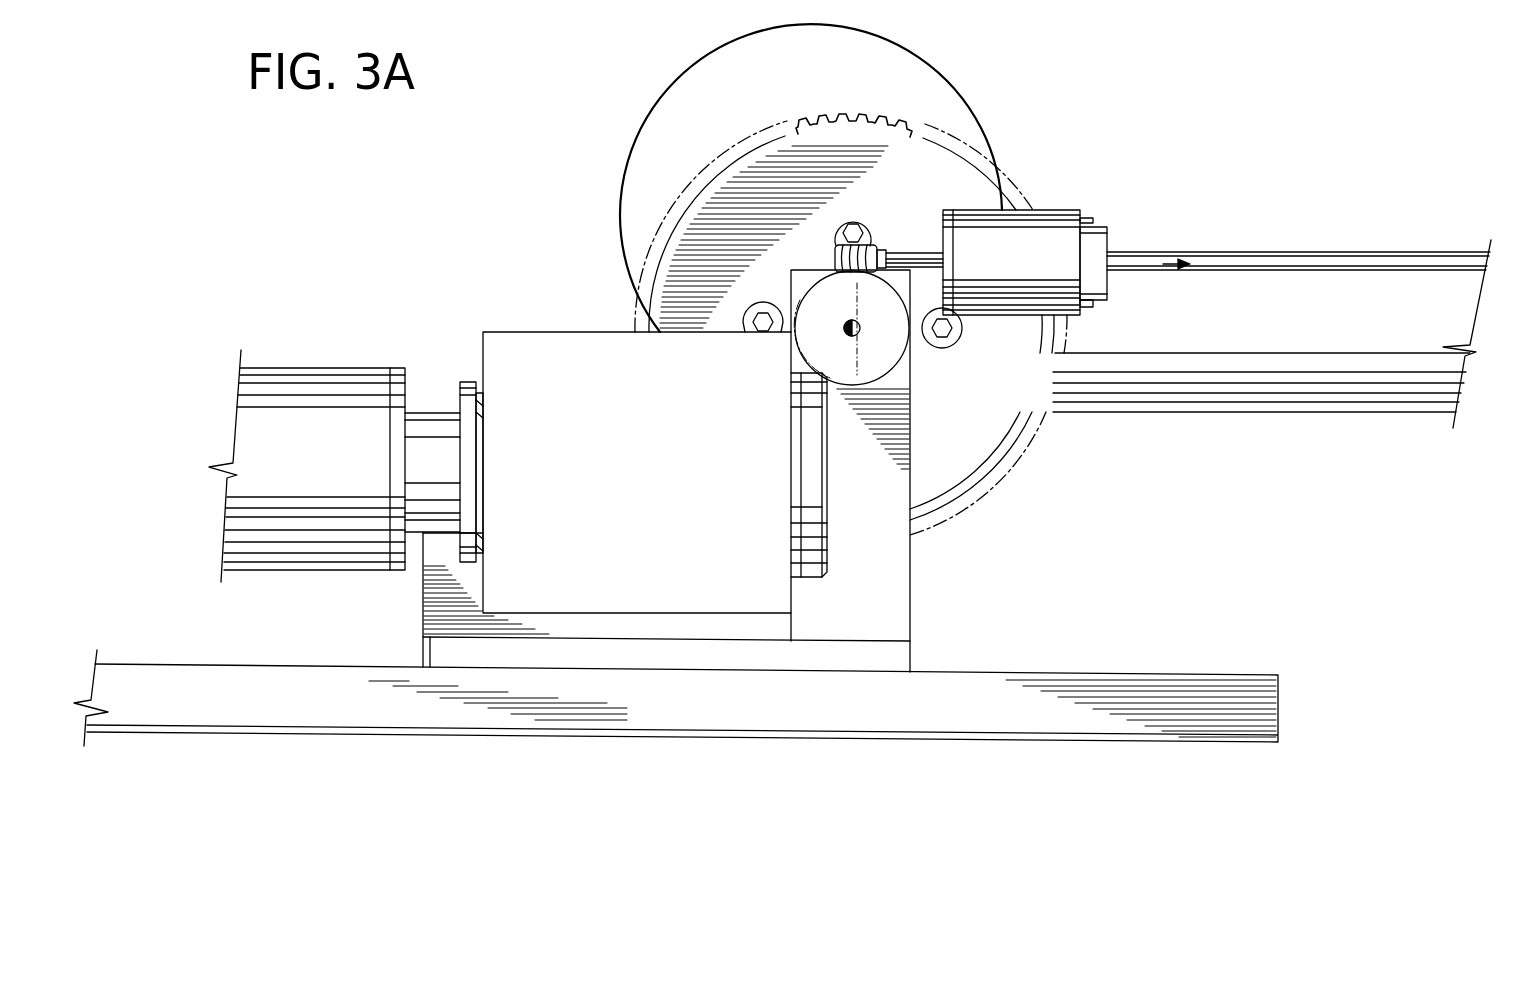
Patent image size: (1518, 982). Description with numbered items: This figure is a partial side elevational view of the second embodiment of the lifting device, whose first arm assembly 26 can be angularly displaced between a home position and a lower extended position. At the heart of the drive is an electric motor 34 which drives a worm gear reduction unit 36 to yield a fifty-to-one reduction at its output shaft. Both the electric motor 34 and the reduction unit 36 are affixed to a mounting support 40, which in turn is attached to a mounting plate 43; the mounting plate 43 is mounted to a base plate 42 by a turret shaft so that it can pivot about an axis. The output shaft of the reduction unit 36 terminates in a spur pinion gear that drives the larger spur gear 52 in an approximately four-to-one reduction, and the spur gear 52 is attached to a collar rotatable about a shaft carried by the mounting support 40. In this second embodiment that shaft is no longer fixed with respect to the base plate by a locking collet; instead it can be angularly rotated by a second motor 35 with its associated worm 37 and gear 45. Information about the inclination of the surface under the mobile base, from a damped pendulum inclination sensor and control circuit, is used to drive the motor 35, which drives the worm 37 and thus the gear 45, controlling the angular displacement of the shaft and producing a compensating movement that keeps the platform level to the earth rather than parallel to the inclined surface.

The first arm assembly 26 is at (1232, 418).
The electric motor 34 is at (288, 376).
The motor 35 is at (1039, 209).
The worm gear reduction unit 36 is at (525, 348).
The worm 37 is at (872, 248).
The mounting support 40 is at (897, 583).
The base plate 42 is at (288, 705).
The mounting plate 43 is at (712, 655).
The gear 45 is at (820, 298).
The spur gear 52 is at (723, 186).